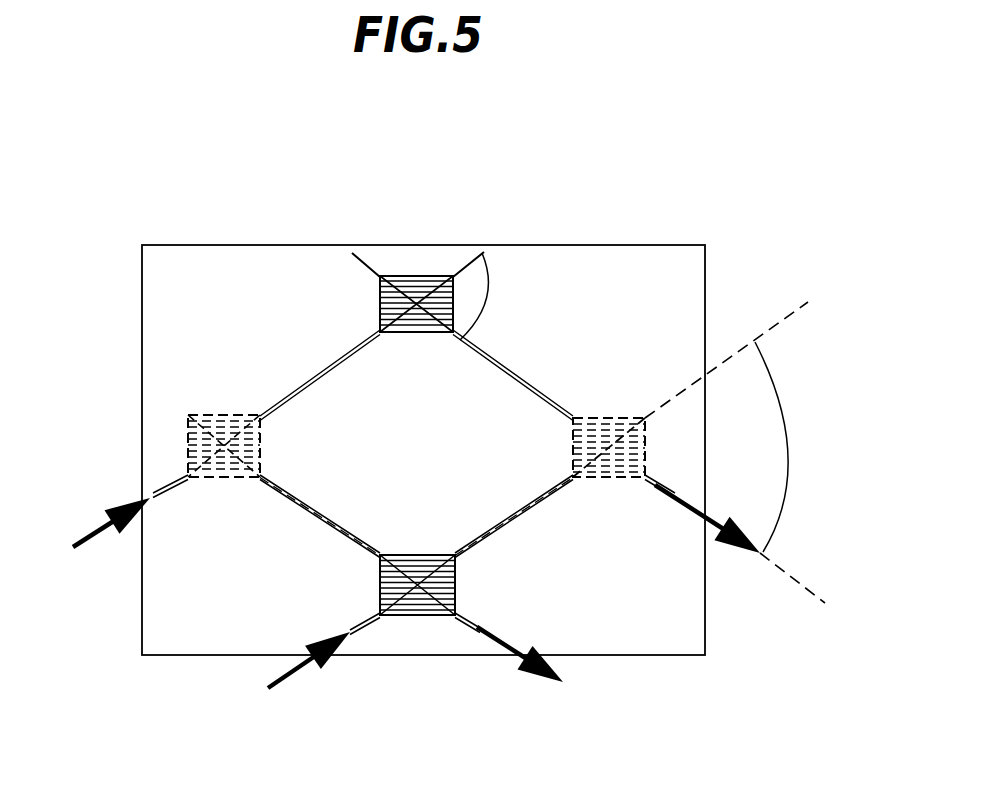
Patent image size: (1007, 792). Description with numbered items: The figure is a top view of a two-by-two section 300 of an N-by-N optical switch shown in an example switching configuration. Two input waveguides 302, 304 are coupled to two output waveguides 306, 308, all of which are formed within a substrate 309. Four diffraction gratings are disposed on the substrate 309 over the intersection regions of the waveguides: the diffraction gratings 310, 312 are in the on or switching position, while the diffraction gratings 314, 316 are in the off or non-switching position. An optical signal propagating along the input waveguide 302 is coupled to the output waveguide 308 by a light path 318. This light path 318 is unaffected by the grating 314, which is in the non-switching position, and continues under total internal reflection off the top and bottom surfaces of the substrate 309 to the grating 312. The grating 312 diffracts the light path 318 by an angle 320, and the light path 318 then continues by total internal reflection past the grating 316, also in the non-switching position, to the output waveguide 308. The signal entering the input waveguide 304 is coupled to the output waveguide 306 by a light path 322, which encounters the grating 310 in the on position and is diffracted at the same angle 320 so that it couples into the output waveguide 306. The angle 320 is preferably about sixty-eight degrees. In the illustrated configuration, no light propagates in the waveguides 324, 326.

The 2×2 section 300 is at (636, 169).
The input waveguide 302 is at (163, 497).
The input waveguide 304 is at (378, 617).
The output waveguide 306 is at (457, 617).
The output waveguide 308 is at (652, 480).
The substrate 309 is at (277, 245).
The diffraction grating 310 is at (415, 615).
The diffraction grating 312 is at (423, 277).
The diffraction grating 314 is at (188, 453).
The diffraction grating 316 is at (605, 420).
The light path 318 is at (315, 373).
The angle 320 is at (833, 462).
The light path 322 is at (350, 632).
The waveguide 324 is at (335, 517).
The waveguide 326 is at (498, 517).